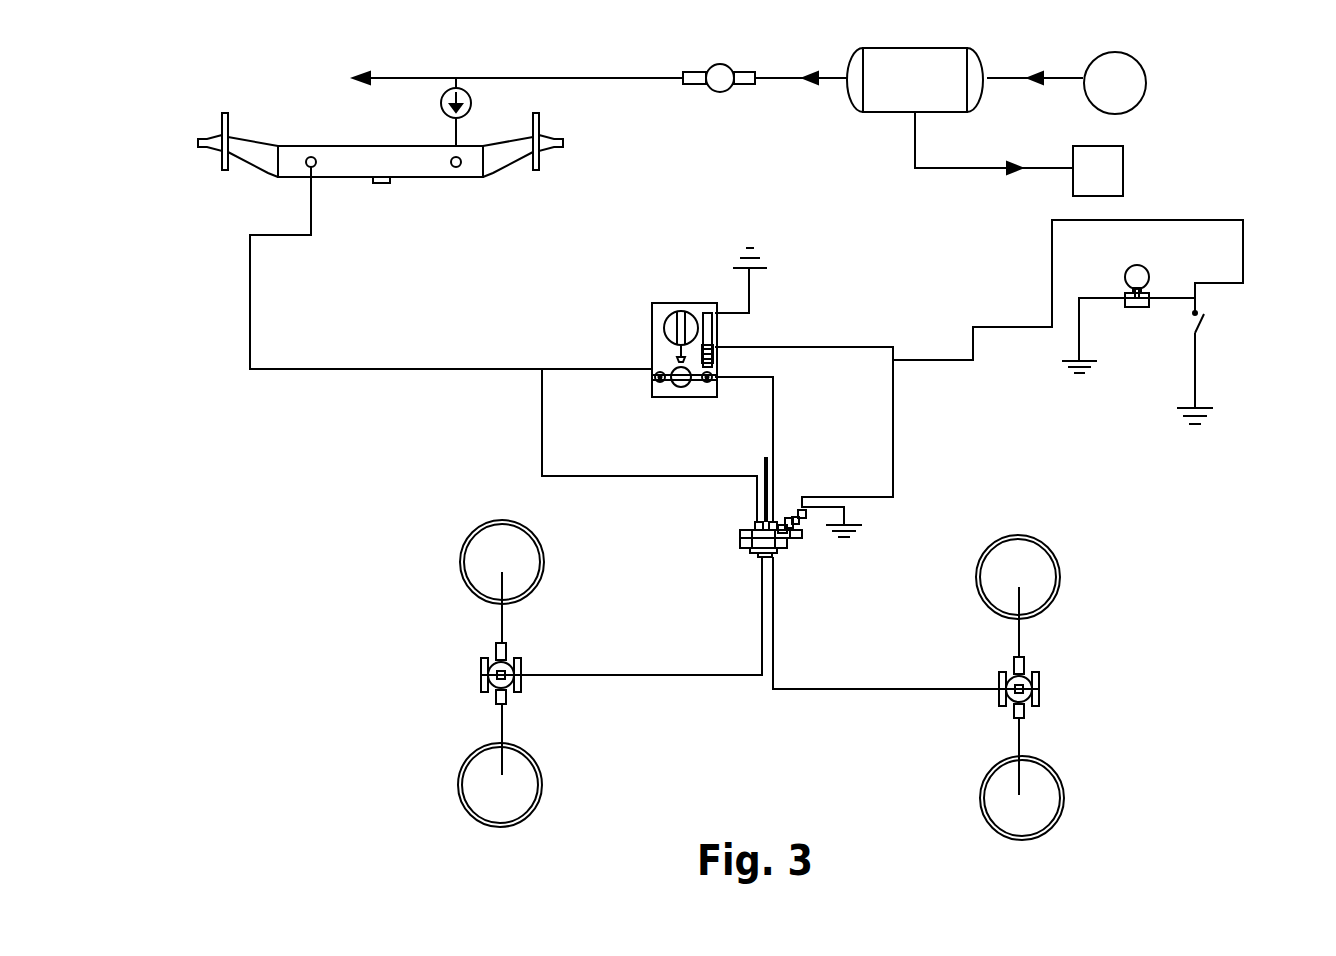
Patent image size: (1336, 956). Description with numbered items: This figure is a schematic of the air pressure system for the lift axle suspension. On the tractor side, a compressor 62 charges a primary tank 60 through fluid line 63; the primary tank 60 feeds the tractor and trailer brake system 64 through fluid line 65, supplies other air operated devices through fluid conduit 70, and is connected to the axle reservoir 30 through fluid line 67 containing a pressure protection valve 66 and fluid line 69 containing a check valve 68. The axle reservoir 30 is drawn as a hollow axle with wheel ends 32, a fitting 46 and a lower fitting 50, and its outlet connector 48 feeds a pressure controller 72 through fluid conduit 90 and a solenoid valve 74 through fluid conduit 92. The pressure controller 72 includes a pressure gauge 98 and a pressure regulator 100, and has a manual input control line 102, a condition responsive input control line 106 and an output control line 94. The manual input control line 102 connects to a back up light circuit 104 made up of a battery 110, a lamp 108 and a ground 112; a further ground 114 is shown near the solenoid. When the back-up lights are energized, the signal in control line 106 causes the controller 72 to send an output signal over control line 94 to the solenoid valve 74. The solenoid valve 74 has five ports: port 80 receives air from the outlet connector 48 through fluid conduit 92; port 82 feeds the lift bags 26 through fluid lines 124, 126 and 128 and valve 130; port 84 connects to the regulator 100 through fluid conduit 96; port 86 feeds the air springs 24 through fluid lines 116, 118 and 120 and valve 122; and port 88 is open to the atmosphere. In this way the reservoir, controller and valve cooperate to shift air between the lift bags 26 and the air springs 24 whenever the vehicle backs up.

The air springs 24 is at (1056, 560).
The lift bags 26 is at (462, 548).
The axle reservoir 30 is at (428, 178).
The wheel hubs 32 is at (218, 160).
The air inlet port 46 is at (461, 167).
The outlet connector 48 is at (308, 157).
The pressure sensor 50 is at (383, 185).
The primary tank 60 is at (877, 113).
The compressor 62 is at (1147, 88).
The fluid line 63 is at (1007, 77).
The tractor and trailer brake system 64 is at (1123, 178).
The fluid line 65 is at (993, 170).
The pressure protection valve 66 is at (707, 66).
The fluid line 67 is at (791, 77).
The check valve 68 is at (441, 106).
The fluid line 69 is at (460, 132).
The fluid conduit 70 is at (388, 76).
The pressure controller 72 is at (677, 303).
The solenoid valve 74 is at (741, 547).
The port 80 is at (754, 522).
The port 82 is at (755, 558).
The port 84 is at (778, 525).
The port 86 is at (775, 558).
The port 88 is at (764, 457).
The fluid conduit 90 is at (390, 368).
The fluid conduit 92 is at (640, 478).
The output control line 94 is at (805, 354).
The fluid conduit 96 is at (778, 390).
The pressure gauge 98 is at (660, 330).
The pressure regulator 100 is at (672, 386).
The manual input control line 102 is at (752, 300).
The back up light circuit 104 is at (1205, 345).
The condition responsive input control line 106 is at (951, 362).
The lamp 108 is at (1150, 274).
The battery 110 is at (768, 253).
The ground 112 is at (1097, 360).
The ground 114 is at (848, 515).
The fluid line 116 is at (878, 688).
The fluid line 118 is at (1022, 633).
The fluid line 120 is at (1022, 735).
The valve 122 is at (1039, 688).
The fluid line 124 is at (617, 675).
The fluid line 126 is at (505, 628).
The fluid line 128 is at (503, 733).
The valve 130 is at (481, 675).